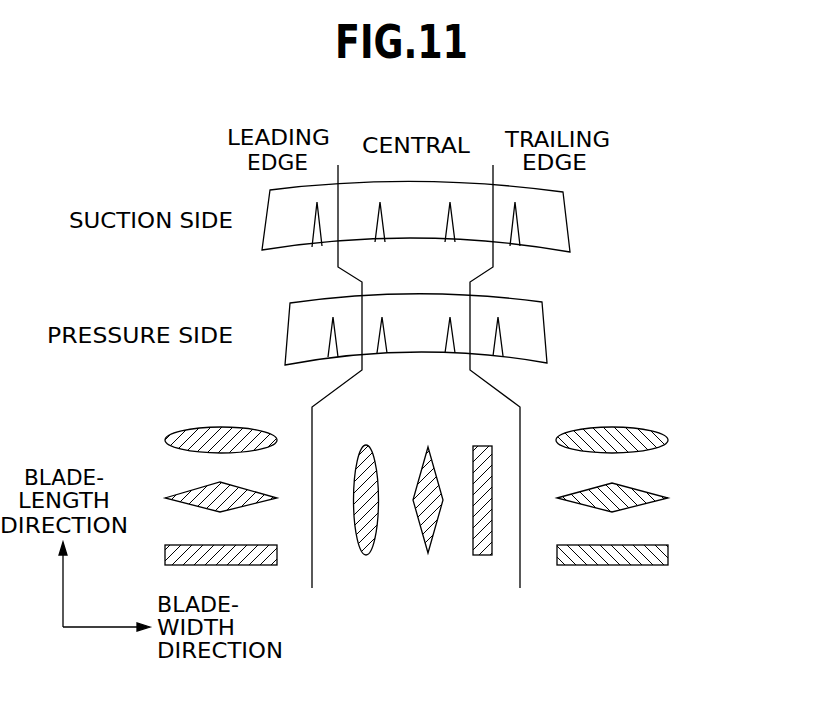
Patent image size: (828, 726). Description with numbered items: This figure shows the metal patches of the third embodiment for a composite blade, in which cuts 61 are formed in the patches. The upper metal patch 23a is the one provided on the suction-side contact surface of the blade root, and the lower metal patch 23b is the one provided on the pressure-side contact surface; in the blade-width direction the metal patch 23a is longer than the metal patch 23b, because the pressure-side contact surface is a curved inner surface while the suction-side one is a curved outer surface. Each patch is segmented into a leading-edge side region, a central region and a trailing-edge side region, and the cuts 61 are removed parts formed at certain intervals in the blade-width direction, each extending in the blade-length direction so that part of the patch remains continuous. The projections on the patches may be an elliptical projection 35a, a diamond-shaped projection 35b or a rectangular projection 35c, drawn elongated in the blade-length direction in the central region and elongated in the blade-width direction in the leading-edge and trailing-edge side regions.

The cut 61 is at (378, 178).
The metal patch 23a is at (565, 215).
The metal patch 23b is at (547, 333).
The projection 35a is at (366, 556).
The projection 35b is at (428, 554).
The projection 35c is at (483, 556).